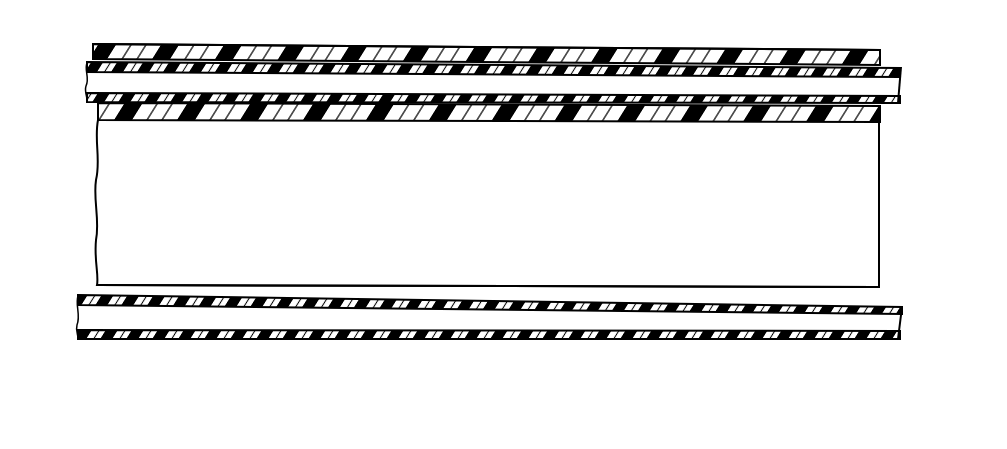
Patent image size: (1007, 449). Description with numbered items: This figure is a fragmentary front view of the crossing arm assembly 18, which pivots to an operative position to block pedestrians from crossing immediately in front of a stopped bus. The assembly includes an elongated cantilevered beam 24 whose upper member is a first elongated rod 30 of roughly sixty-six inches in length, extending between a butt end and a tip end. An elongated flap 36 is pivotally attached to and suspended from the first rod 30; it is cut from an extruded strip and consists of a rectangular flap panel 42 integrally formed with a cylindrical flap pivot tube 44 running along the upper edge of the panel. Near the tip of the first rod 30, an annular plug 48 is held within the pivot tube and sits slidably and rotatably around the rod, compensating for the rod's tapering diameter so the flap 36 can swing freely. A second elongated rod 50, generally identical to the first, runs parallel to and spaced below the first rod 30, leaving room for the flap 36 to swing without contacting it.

The crossing arm assembly 18 is at (795, 48).
The elongated cantilevered beam 24 is at (84, 358).
The first elongated rod 30 is at (157, 92).
The elongated flap 36 is at (382, 267).
The flap panel 42 is at (578, 275).
The flap pivot tube 44 is at (352, 54).
The annular plug 48 is at (867, 62).
The second elongated rod 50 is at (178, 337).